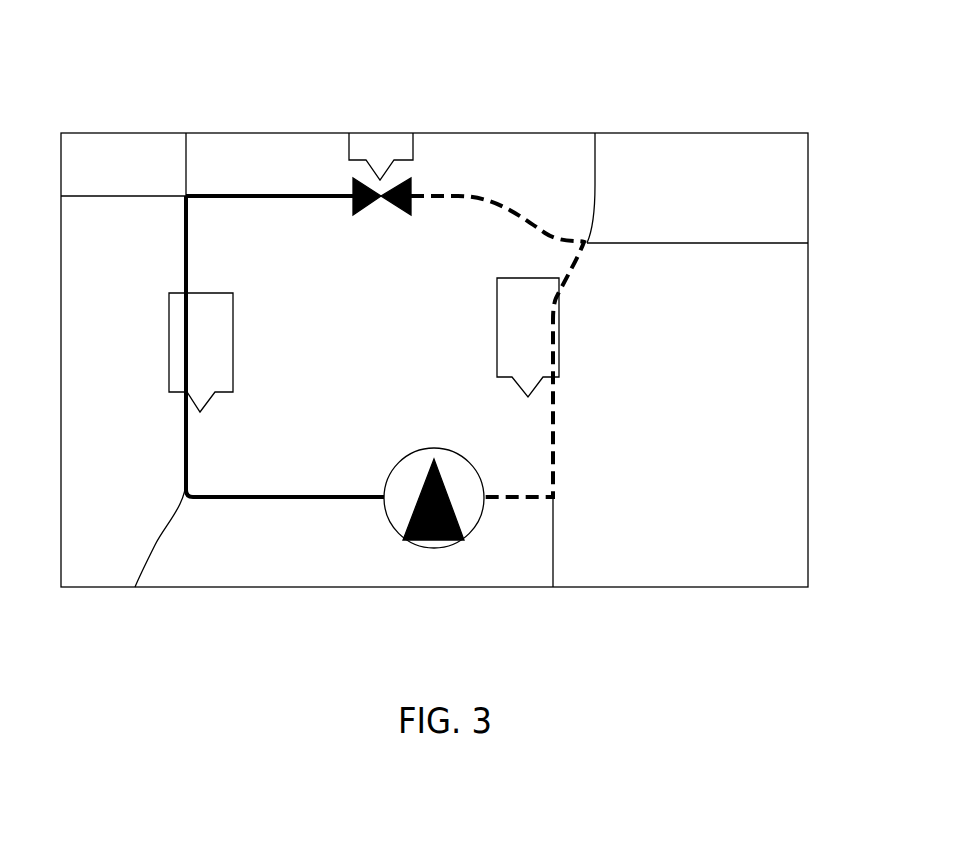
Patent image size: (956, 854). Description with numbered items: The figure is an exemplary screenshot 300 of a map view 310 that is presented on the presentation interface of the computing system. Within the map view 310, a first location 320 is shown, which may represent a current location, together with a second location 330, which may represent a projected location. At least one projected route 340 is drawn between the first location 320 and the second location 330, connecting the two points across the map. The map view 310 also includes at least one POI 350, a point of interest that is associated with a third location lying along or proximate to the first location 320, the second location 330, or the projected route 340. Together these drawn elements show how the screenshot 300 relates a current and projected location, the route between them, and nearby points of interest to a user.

The screenshot 300 is at (570, 59).
The map view 310 is at (268, 611).
The first location 320 is at (385, 529).
The second location 330 is at (340, 137).
The projected route 340 is at (186, 445).
The POI 350 is at (234, 340).